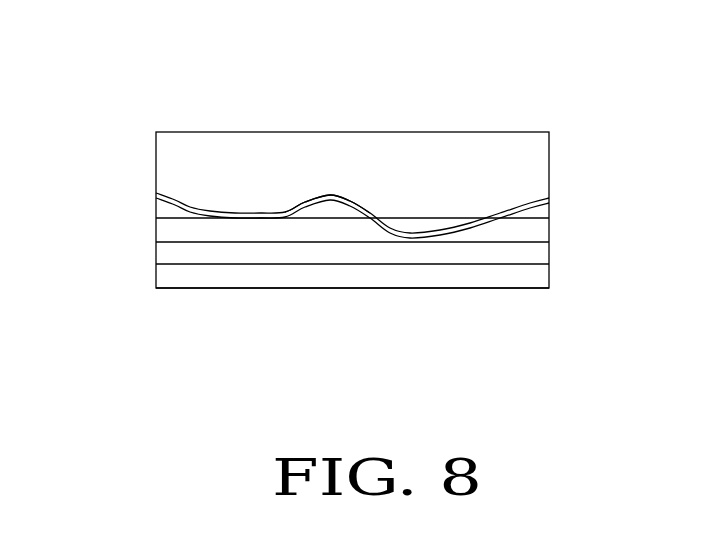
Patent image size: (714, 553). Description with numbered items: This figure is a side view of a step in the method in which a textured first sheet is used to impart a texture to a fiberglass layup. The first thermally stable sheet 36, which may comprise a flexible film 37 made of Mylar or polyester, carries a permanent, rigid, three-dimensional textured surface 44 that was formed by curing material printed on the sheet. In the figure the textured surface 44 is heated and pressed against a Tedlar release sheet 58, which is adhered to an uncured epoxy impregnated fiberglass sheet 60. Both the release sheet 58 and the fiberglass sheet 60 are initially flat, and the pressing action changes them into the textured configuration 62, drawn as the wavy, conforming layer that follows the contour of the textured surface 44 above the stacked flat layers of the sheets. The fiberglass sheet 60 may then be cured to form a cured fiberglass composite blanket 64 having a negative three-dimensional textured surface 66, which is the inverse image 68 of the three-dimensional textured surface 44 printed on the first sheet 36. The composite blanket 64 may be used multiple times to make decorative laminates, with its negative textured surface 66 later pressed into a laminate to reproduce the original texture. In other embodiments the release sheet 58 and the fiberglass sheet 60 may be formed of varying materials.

The uncured epoxy impregnated fiberglass sheet 60 is at (467, 132).
The textured configuration 62 is at (208, 210).
The Tedlar release sheet 58 is at (532, 201).
The cured fiberglass composite blanket 64 is at (341, 106).
The negative three-dimensional textured surface 66 is at (341, 106).
The inverse image 68 is at (332, 189).
The textured surface 44 is at (200, 217).
The first thermally stable sheet 36 is at (371, 339).
The flexible film 37 is at (482, 277).